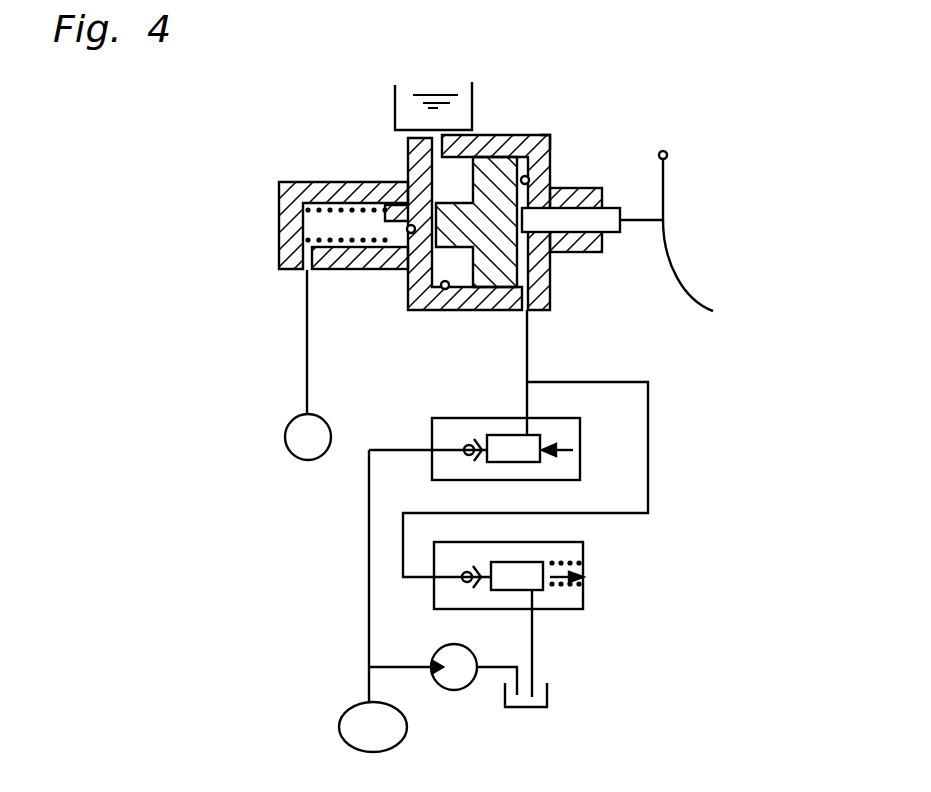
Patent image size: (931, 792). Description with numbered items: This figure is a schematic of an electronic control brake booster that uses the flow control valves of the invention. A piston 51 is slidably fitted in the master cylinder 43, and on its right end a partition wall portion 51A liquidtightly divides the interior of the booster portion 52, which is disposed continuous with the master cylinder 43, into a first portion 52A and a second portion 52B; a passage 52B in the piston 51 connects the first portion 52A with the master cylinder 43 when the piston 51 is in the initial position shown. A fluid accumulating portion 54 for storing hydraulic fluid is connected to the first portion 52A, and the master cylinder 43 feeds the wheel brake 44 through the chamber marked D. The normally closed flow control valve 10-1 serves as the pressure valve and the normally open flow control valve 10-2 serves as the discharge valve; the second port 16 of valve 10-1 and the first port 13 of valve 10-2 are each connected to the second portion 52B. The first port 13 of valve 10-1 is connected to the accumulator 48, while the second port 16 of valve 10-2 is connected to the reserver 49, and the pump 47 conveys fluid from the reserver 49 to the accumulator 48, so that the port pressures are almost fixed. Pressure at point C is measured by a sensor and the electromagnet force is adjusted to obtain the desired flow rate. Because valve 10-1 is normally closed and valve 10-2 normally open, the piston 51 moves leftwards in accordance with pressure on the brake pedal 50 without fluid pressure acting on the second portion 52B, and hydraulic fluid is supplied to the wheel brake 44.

The master cylinder 43 is at (303, 182).
The piston 51 is at (406, 188).
The partition wall portion 51A is at (548, 137).
The booster portion 52 is at (486, 135).
The first portion 52A is at (445, 290).
The second portion 52B is at (411, 233).
The fluid accumulating portion 54 is at (395, 113).
The brake pedal 50 is at (712, 292).
The wheel brake 44 is at (307, 460).
The second port 16 is at (524, 417).
The first port 13 is at (432, 456).
The pump 47 is at (460, 690).
The accumulator 48 is at (352, 708).
The reserver 49 is at (548, 693).
The normally closed flow control valve 10-1 is at (394, 514).
The normally open flow control valve 10-2 is at (583, 598).
The chamber D is at (305, 330).
The point C is at (528, 350).